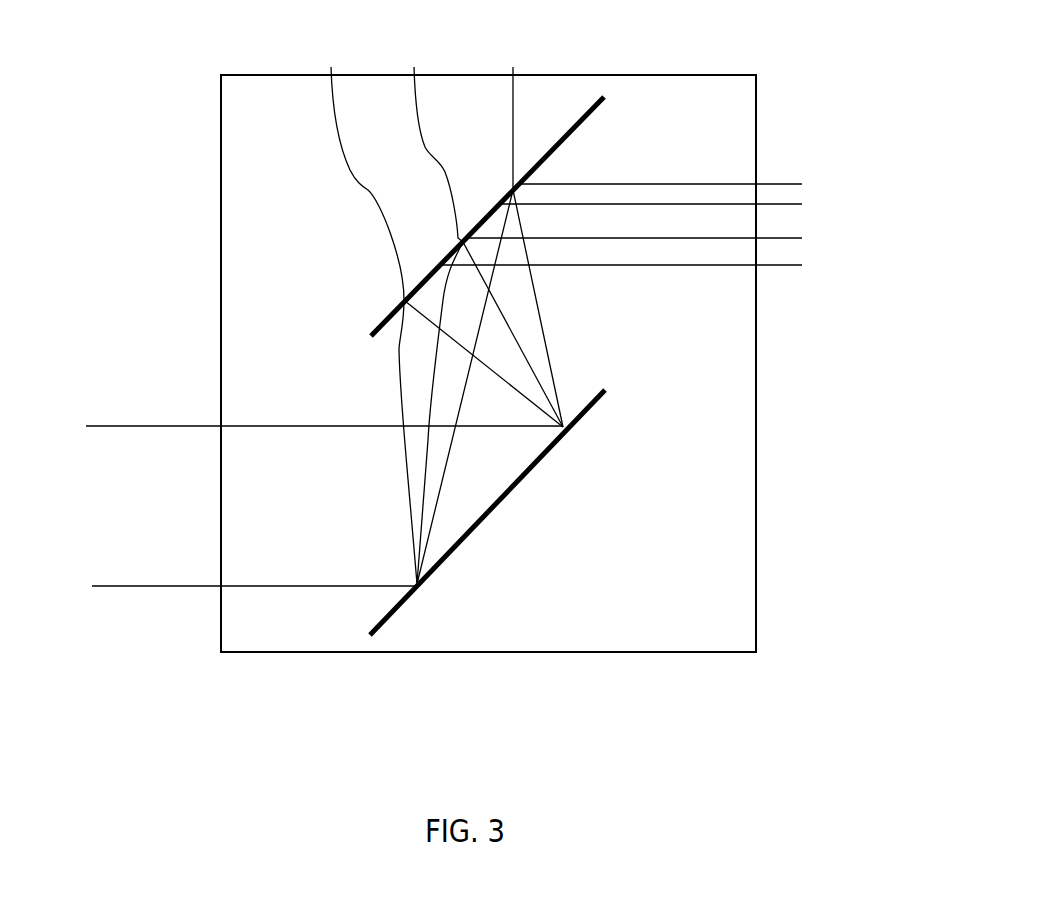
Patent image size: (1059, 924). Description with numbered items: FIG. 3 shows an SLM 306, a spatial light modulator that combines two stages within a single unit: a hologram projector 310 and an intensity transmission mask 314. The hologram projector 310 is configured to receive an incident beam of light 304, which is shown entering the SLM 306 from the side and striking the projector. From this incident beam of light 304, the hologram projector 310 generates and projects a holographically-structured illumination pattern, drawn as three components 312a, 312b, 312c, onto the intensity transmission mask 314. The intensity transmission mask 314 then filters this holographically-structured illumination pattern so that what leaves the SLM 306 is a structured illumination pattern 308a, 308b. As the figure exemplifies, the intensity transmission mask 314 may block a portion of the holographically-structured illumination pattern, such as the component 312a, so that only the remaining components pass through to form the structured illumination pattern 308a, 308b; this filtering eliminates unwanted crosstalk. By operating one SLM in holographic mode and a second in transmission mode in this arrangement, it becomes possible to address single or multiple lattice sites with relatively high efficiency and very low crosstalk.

The incident beam of light 304 is at (86, 409).
The SLM 306 is at (373, 652).
The structured illumination pattern 308a is at (807, 170).
The structured illumination pattern 308b is at (807, 230).
The hologram projector 310 is at (587, 410).
The holographically-structured illumination pattern 312a is at (490, 308).
The holographically-structured illumination pattern 312b is at (475, 308).
The holographically-structured illumination pattern 312c is at (435, 308).
The intensity transmission mask 314 is at (371, 336).